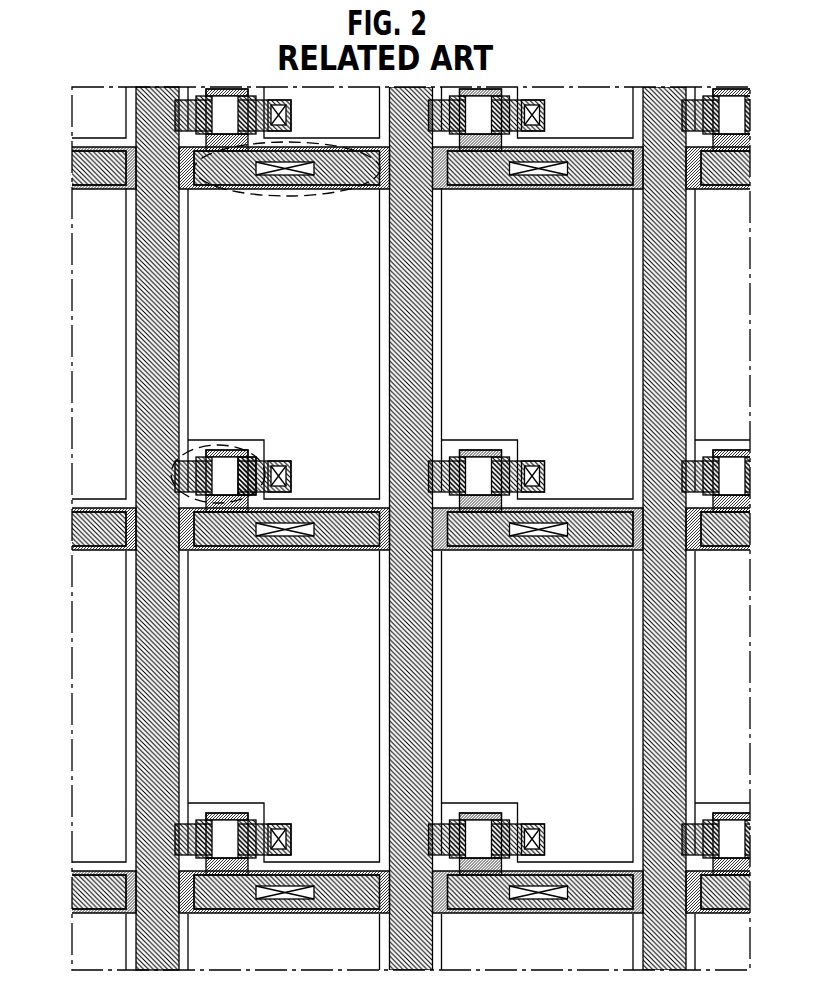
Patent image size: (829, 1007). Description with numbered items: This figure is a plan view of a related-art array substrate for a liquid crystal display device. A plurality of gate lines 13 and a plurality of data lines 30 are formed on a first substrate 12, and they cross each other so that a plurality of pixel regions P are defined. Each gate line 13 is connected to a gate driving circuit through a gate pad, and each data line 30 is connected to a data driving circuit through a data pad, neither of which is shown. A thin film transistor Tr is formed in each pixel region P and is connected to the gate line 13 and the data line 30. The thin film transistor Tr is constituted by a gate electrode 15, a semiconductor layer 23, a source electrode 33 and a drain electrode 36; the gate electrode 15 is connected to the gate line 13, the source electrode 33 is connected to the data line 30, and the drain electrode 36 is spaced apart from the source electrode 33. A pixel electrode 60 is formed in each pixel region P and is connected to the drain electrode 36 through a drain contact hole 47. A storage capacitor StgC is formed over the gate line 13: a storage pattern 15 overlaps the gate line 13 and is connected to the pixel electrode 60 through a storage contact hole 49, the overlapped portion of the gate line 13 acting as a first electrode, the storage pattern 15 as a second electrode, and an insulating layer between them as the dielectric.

The first substrate 12 is at (733, 953).
The gate line 13 is at (120, 508).
The gate electrode 15 is at (221, 452).
The semiconductor layer 23 is at (247, 509).
The data line 30 is at (153, 360).
The source electrode 33 is at (170, 467).
The drain electrode 36 is at (275, 492).
The drain contact hole 47 is at (279, 466).
The storage contact hole 49 is at (291, 176).
The pixel electrode 60 is at (386, 296).
The pixel region P is at (207, 277).
The thin film transistor Tr is at (250, 448).
The storage capacitor StgC is at (261, 197).